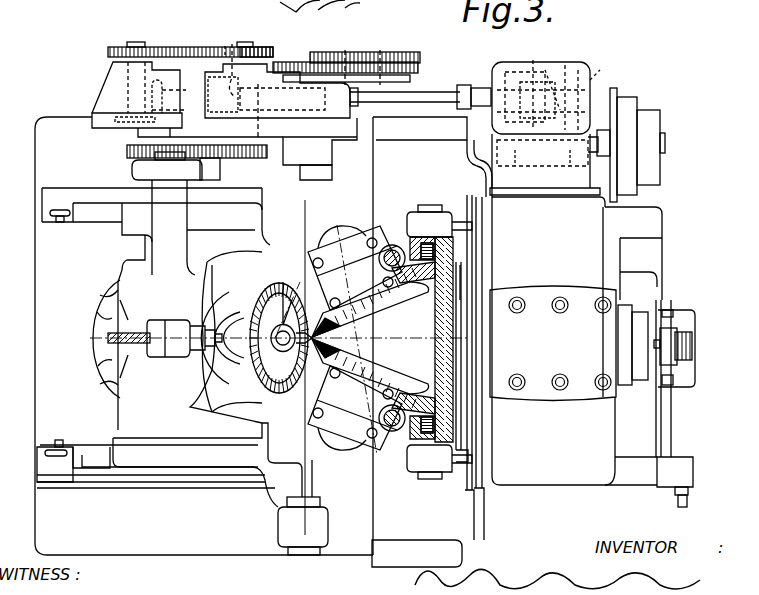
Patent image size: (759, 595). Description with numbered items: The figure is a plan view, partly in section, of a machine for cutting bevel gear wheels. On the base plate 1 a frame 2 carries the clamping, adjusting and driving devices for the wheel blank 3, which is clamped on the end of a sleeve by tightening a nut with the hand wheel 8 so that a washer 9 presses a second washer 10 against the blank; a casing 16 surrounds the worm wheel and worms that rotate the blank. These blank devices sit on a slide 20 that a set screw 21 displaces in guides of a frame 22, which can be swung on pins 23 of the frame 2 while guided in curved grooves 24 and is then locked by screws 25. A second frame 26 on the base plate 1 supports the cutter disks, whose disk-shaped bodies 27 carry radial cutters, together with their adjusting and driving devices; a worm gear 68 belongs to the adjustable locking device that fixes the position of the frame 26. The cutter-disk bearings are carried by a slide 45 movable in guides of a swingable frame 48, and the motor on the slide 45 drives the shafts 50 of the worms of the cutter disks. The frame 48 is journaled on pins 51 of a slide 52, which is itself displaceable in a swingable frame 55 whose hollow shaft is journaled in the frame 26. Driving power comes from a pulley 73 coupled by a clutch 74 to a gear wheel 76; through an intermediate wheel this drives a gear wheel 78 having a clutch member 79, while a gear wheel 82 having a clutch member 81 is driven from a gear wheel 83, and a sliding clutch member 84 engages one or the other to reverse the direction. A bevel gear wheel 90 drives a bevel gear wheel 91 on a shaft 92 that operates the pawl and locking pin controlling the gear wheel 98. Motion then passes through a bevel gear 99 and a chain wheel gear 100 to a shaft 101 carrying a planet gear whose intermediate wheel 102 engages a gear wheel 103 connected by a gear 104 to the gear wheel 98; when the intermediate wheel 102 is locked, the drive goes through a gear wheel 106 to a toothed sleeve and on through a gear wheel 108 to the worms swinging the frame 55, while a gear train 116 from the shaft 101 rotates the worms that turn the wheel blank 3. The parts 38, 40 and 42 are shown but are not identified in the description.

The base plate 1 is at (148, 552).
The frame 2 is at (50, 195).
The wheel blank 3 is at (282, 392).
The hand wheel 8 is at (110, 375).
The washer 9 is at (304, 296).
The second washer 10 is at (262, 290).
The casing 16 is at (140, 275).
The slide 20 is at (237, 432).
The set screw 21 is at (118, 342).
The frame 22 is at (292, 480).
The pins 23 is at (305, 555).
The curved grooves 24 is at (100, 214).
The screws 25 is at (60, 224).
The frame 26 is at (550, 478).
The disk-shaped bodies 27 is at (400, 318).
The gear 38 is at (331, 12).
The gear 40 is at (358, 5).
The gear 42 is at (300, 12).
The slide 45 is at (462, 292).
The swingable frame 48 is at (452, 418).
The shafts 50 is at (395, 440).
The pins 51 is at (436, 205).
The slide 52 is at (462, 452).
The swingable frame 55 is at (483, 218).
The worm gear 68 is at (690, 344).
The pulley 73 is at (622, 130).
The clutch 74 is at (600, 130).
The gear wheel 76 is at (568, 158).
The gear wheel 78 is at (625, 62).
The clutch member 79 is at (600, 85).
The clutch member 81 is at (530, 62).
The gear wheel 82 is at (503, 62).
The gear wheel 83 is at (514, 160).
The clutch member 84 is at (580, 68).
The bevel gear wheel 90 is at (567, 62).
The bevel gear wheel 91 is at (550, 70).
The shaft 92 is at (438, 96).
The gear wheel 98 is at (322, 52).
The bevel gear 99 is at (118, 112).
The chain wheel gear 100 is at (173, 46).
The shaft 101 is at (257, 46).
The intermediate wheel 102 is at (218, 37).
The gear wheel 103 is at (320, 100).
The gear 104 is at (340, 58).
The gear wheel 106 is at (222, 30).
The gear wheel 108 is at (270, 130).
The gear train 116 is at (128, 150).